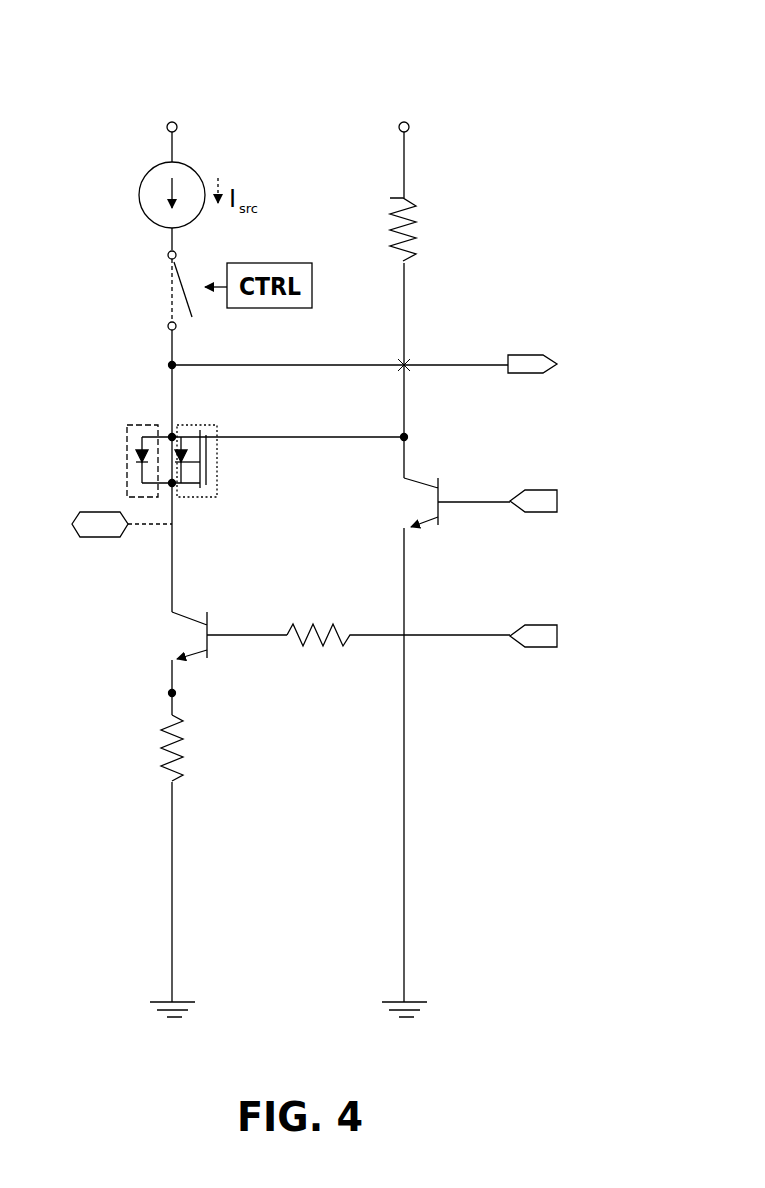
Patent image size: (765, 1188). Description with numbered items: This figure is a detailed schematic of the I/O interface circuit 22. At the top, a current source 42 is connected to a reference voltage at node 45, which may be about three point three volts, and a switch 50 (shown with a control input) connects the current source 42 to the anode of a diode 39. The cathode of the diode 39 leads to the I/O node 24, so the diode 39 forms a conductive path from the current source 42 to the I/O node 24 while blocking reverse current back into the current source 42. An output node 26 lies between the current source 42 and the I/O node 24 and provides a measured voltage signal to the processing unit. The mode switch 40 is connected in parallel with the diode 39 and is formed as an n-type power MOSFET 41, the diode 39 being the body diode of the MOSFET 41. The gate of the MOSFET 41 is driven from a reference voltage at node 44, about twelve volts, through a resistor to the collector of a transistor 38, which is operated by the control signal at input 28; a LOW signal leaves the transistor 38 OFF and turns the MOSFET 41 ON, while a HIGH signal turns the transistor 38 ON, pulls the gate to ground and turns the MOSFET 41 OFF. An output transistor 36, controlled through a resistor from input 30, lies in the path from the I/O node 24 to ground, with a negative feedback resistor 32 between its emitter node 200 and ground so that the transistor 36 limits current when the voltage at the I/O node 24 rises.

The I/O interface circuit 22 is at (596, 72).
The I/O node 24 is at (93, 537).
The output node 26 is at (528, 355).
The input 28 is at (528, 490).
The input 30 is at (528, 625).
The negative feedback resistor 32 is at (160, 737).
The output transistor 36 is at (208, 612).
The transistor 38 is at (438, 480).
The diode 39 is at (140, 423).
The mode switch 40 is at (215, 467).
The n-type power MOSFET 41 is at (150, 408).
The current source 42 is at (148, 168).
The node 44 is at (410, 123).
The node 45 is at (178, 124).
The switch 50 is at (170, 283).
The node 200 is at (167, 693).